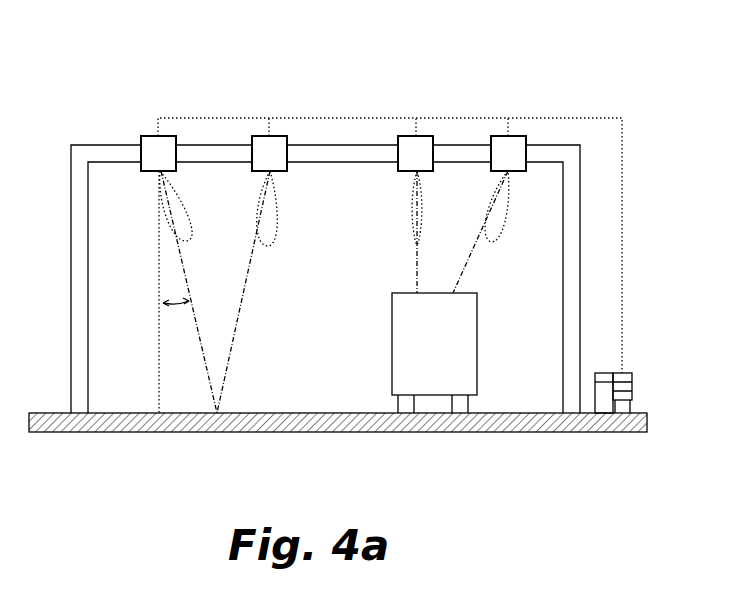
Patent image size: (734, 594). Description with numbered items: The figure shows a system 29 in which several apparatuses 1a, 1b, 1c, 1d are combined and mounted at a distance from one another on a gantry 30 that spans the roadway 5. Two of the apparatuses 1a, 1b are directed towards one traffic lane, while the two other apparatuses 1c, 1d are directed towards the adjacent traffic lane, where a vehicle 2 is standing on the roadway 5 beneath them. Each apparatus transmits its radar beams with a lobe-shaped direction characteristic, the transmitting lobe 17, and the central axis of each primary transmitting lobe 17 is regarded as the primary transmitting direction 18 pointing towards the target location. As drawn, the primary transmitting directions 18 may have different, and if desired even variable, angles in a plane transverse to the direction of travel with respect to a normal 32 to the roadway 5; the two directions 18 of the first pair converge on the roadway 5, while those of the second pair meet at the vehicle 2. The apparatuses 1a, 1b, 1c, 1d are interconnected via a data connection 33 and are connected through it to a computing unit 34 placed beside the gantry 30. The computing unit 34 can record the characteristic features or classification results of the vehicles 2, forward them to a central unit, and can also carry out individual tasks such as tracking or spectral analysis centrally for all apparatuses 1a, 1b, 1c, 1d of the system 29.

The system 29 is at (612, 62).
The gantry 30 is at (92, 150).
The apparatus 1a is at (165, 140).
The apparatus 1b is at (276, 140).
The apparatus 1c is at (420, 140).
The apparatus 1d is at (515, 140).
The transmitting lobe 17 is at (254, 213).
The primary transmitting direction 18 is at (238, 326).
The vehicle 2 is at (400, 362).
The roadway 5 is at (306, 412).
The normal 32 is at (157, 383).
The data connection 33 is at (630, 202).
The computing unit 34 is at (633, 397).